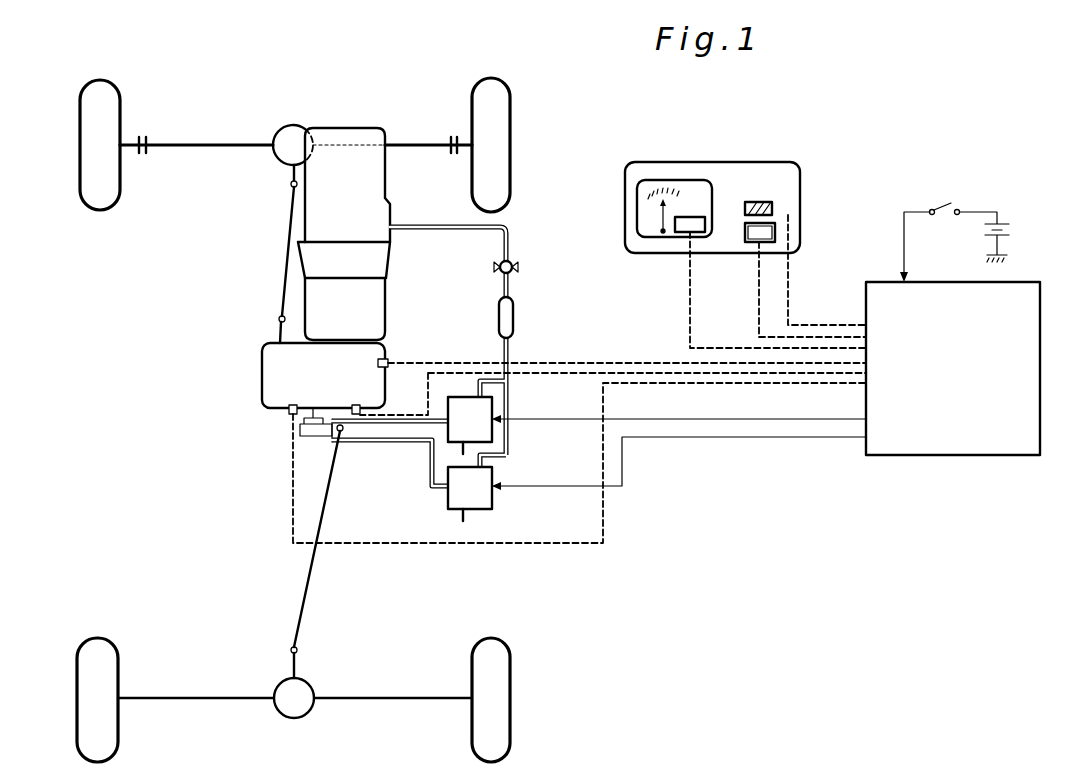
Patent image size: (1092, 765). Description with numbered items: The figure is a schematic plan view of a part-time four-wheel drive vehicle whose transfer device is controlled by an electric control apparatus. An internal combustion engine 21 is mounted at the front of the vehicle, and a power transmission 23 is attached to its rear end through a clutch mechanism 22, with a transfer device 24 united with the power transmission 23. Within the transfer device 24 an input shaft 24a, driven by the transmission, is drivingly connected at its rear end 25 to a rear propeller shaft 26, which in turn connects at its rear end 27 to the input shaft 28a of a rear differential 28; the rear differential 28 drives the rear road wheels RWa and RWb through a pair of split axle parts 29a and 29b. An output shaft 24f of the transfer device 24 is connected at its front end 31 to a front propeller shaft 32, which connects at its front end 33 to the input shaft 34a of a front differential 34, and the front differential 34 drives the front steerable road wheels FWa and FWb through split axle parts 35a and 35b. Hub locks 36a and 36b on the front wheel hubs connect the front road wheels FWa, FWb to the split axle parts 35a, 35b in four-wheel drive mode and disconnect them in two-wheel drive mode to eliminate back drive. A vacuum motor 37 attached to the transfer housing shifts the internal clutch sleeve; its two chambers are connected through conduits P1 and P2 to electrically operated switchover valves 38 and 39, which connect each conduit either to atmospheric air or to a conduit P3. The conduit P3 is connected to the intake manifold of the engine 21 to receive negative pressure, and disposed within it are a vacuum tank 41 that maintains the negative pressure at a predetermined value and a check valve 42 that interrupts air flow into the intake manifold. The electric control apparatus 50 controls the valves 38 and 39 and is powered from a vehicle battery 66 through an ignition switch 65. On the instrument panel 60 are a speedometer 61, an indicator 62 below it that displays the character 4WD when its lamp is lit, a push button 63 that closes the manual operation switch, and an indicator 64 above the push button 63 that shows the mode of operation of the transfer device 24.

The internal combustion engine 21 is at (388, 172).
The clutch mechanism 22 is at (388, 255).
The power transmission 23 is at (386, 310).
The transfer device 24 is at (250, 364).
The input shaft 24a is at (342, 412).
The output shaft 24f is at (279, 340).
The rear end of input shaft 25 is at (341, 433).
The rear propeller shaft 26 is at (324, 513).
The rear end of rear propeller shaft 27 is at (290, 649).
The rear differential 28 is at (294, 718).
The input shaft of rear differential 28a is at (296, 665).
The split axle part 29a is at (193, 698).
The split axle part 29b is at (402, 698).
The front end of output shaft 31 is at (279, 316).
The front propeller shaft 32 is at (287, 256).
The front end of front propeller shaft 33 is at (290, 189).
The front differential 34 is at (293, 125).
The input shaft of front differential 34a is at (291, 183).
The split axle part 35a is at (228, 145).
The split axle part 35b is at (405, 145).
The hub lock 36a is at (143, 137).
The hub lock 36b is at (454, 138).
The vacuum motor 37 is at (312, 446).
The switchover valve 38 is at (493, 410).
The switchover valve 39 is at (493, 475).
The vacuum tank 41 is at (513, 320).
The check valve 42 is at (513, 268).
The electric control apparatus 50 is at (1040, 336).
The instrument panel 60 is at (660, 162).
The speedometer 61 is at (690, 180).
The indicator 62 is at (706, 226).
The push button 63 is at (776, 237).
The indicator 64 is at (772, 208).
The ignition switch 65 is at (945, 207).
The vehicle battery 66 is at (1000, 226).
The conduit P1 is at (396, 427).
The conduit P2 is at (435, 452).
The conduit P3 is at (510, 234).
The front steerable road wheel FWa is at (118, 86).
The front steerable road wheel FWb is at (510, 82).
The rear road wheel RWa is at (118, 643).
The rear road wheel RWb is at (510, 643).